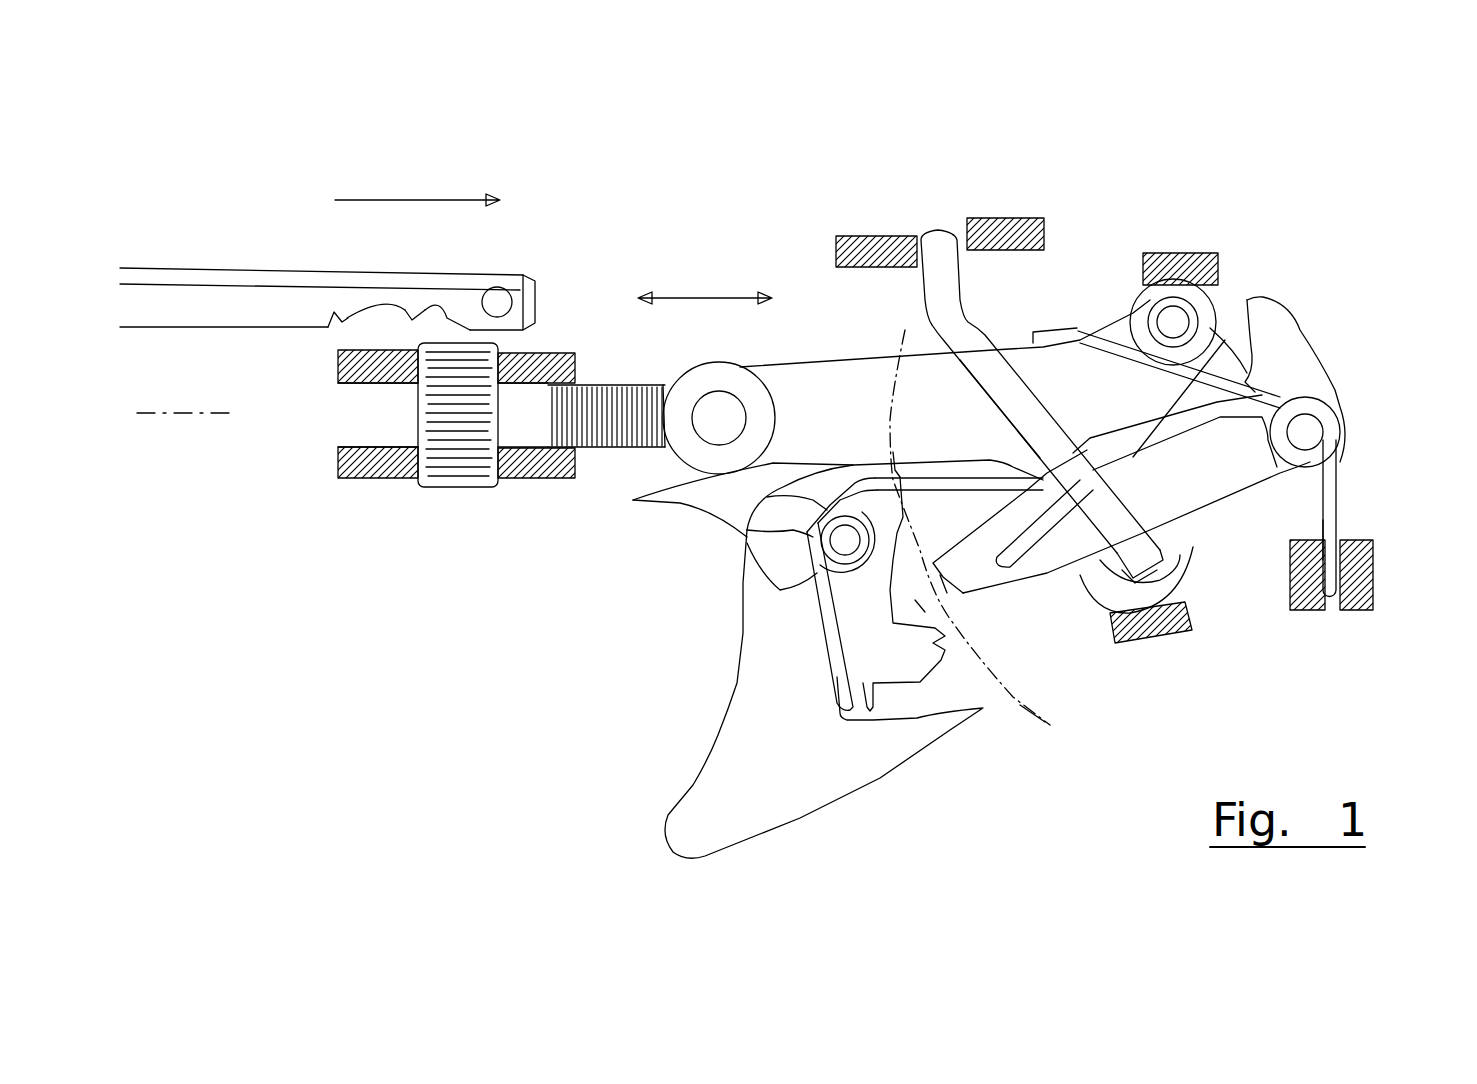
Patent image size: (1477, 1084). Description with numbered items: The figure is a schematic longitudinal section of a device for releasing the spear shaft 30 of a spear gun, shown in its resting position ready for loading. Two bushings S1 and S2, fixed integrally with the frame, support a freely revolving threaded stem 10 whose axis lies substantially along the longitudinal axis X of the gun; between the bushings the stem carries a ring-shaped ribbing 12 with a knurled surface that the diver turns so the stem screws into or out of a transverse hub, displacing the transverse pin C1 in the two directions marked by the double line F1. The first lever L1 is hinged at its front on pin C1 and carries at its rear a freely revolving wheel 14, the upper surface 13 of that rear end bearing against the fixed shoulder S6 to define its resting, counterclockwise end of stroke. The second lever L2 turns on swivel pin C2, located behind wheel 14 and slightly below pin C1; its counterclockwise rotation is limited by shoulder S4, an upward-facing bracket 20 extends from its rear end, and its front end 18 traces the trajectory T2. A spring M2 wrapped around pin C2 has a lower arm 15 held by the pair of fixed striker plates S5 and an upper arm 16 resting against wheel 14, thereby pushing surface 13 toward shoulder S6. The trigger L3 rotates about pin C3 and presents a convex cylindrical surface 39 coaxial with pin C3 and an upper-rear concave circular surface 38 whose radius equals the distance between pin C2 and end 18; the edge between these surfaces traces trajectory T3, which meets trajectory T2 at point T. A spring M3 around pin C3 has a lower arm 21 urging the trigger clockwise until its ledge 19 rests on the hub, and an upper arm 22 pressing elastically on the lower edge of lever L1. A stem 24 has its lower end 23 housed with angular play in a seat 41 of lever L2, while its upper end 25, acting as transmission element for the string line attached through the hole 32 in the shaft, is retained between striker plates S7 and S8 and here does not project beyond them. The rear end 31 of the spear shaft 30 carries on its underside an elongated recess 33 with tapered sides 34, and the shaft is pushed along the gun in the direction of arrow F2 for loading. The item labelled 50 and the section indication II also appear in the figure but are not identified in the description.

The threaded stem 10 is at (366, 406).
The ring-shaped ribbing 12 is at (445, 488).
The surface 13 is at (1128, 300).
The wheel 14 is at (1180, 320).
The lower arm 15 is at (1338, 527).
The upper arm 16 is at (1045, 332).
The front end 18 is at (947, 596).
The ledge 19 is at (666, 500).
The bracket 20 is at (1298, 352).
The lower arm 21 is at (840, 679).
The upper arm 22 is at (955, 480).
The lower end 23 is at (1120, 570).
The stem 24 is at (990, 360).
The upper end 25 is at (938, 238).
The spear shaft 30 is at (226, 268).
The rear end 31 is at (257, 312).
The hole 32 is at (497, 302).
The elongated recess 33 is at (415, 310).
The tapered sides 34 is at (332, 318).
The concave circular surface 38 is at (932, 573).
The convex cylindrical surface 39 is at (917, 470).
The seat 41 is at (1137, 580).
The bar 50 is at (1165, 418).
The transverse pin C1 is at (719, 418).
The swivel pin C2 is at (1307, 432).
The pin C3 is at (850, 540).
The first lever L1 is at (842, 366).
The second lever L2 is at (1199, 511).
The trigger L3 is at (857, 767).
The spring M2 is at (1337, 487).
The spring M3 is at (840, 543).
The double line F1 is at (722, 297).
The arrow F2 is at (452, 198).
The bushing S1 is at (360, 467).
The bushing S2 is at (525, 470).
The shoulder S4 is at (1133, 633).
The striker plates S5 is at (1367, 590).
The shoulder S6 is at (1198, 263).
The striker plate S7 is at (862, 244).
The striker plate S8 is at (1015, 228).
The point T is at (907, 442).
The trajectory T2 is at (1020, 705).
The trajectory T3 is at (917, 617).
The longitudinal axis X is at (171, 413).
The section plane II is at (672, 382).